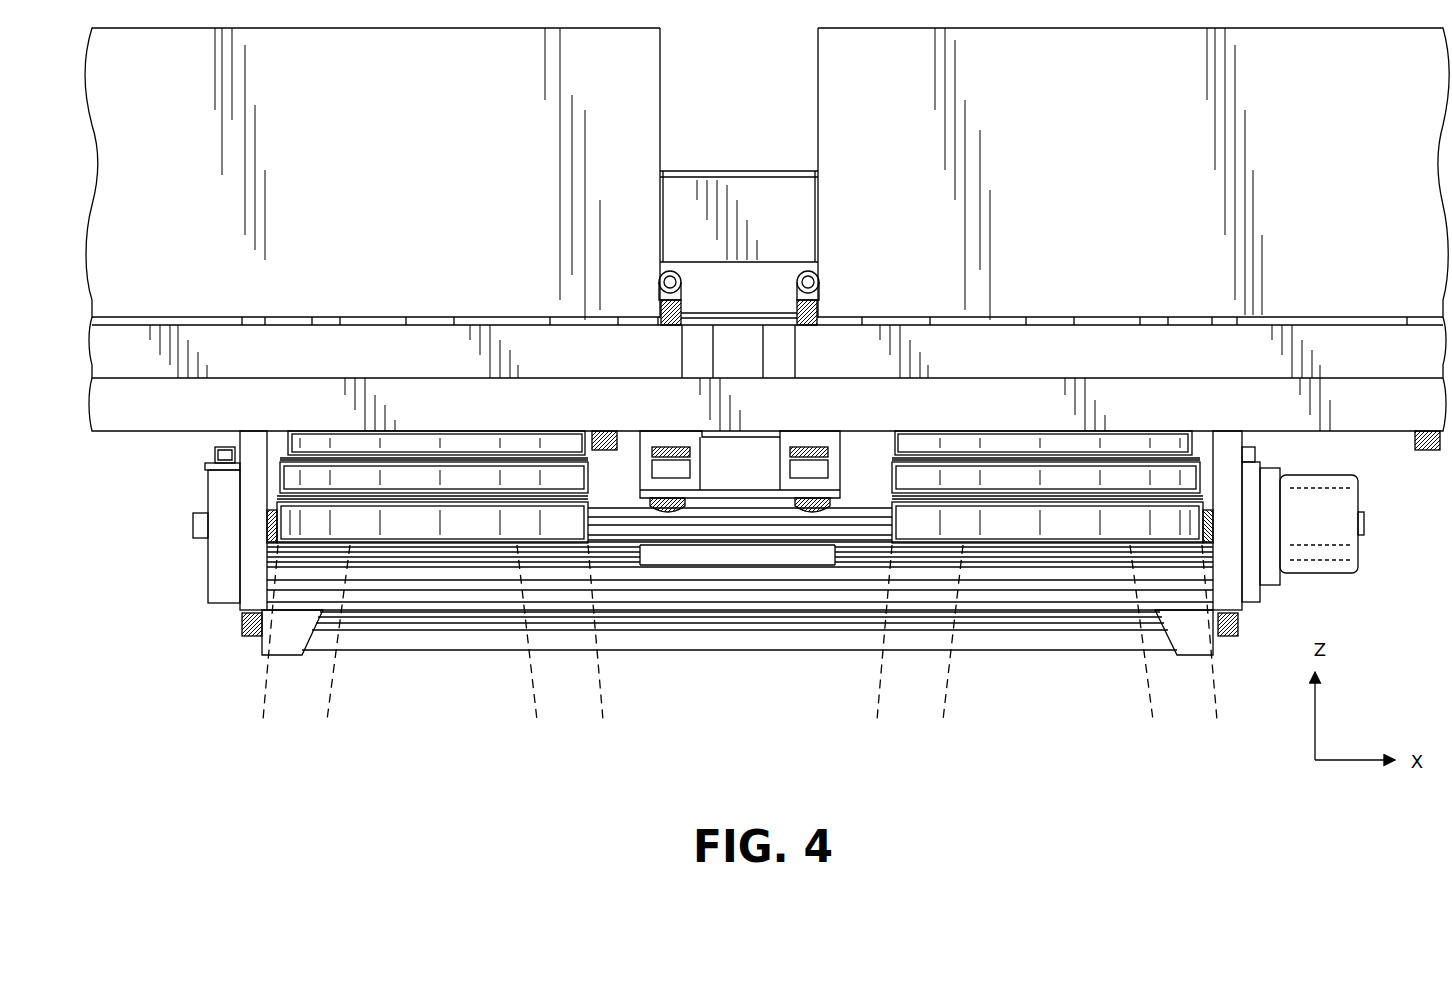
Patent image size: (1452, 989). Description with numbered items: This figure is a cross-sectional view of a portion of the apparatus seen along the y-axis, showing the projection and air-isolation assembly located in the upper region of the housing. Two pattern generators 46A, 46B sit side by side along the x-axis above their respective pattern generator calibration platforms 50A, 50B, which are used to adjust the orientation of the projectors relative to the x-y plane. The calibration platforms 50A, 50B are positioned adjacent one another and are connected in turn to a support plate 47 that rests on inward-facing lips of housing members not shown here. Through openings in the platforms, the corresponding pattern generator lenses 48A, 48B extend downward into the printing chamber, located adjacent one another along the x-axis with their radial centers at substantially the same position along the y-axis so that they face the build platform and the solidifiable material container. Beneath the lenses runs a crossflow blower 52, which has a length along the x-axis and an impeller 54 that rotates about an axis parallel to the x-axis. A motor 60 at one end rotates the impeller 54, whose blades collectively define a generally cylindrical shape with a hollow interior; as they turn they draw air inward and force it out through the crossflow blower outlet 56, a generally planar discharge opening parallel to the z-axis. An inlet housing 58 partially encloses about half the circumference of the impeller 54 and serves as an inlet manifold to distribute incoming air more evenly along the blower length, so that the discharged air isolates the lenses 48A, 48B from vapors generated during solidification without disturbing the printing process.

The pattern generator 46A is at (423, 176).
The pattern generator 46B is at (1107, 177).
The inlet housing 58 is at (767, 230).
The pattern generator calibration platform 50A is at (392, 360).
The pattern generator calibration platform 50B is at (1132, 362).
The support plate 47 is at (175, 417).
The crossflow blower 52 is at (258, 646).
The pattern generator lens 48A is at (468, 548).
The pattern generator lens 48B is at (1062, 548).
The impeller 54 is at (712, 592).
The crossflow blower outlet 56 is at (768, 612).
The motor 60 is at (1350, 552).